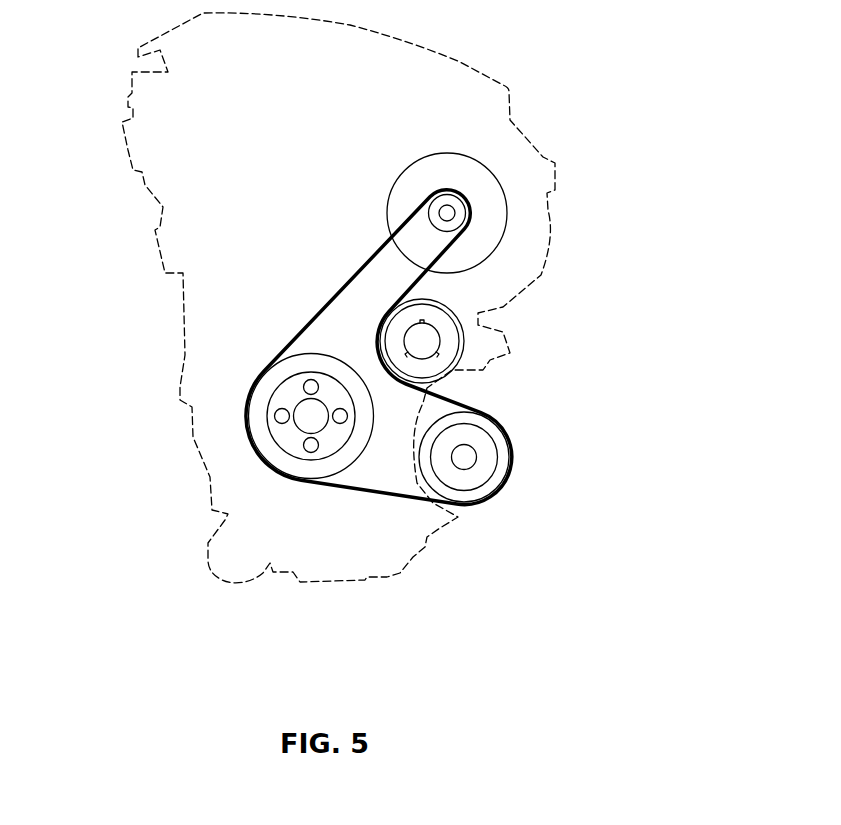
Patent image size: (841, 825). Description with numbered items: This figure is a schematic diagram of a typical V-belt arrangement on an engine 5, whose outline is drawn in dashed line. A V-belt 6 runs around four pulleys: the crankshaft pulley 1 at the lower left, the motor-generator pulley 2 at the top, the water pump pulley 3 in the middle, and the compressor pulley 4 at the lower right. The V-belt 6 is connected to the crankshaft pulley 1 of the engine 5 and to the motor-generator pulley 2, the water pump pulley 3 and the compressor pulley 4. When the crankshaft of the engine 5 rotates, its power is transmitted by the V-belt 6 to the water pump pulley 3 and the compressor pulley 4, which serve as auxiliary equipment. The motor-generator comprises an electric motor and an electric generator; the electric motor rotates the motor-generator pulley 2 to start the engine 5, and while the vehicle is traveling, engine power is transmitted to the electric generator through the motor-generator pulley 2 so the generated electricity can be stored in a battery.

The crankshaft pulley 1 is at (268, 437).
The motor-generator pulley 2 is at (458, 203).
The water pump pulley 3 is at (428, 340).
The compressor pulley 4 is at (490, 460).
The engine 5 is at (142, 182).
The V-belt 6 is at (370, 493).